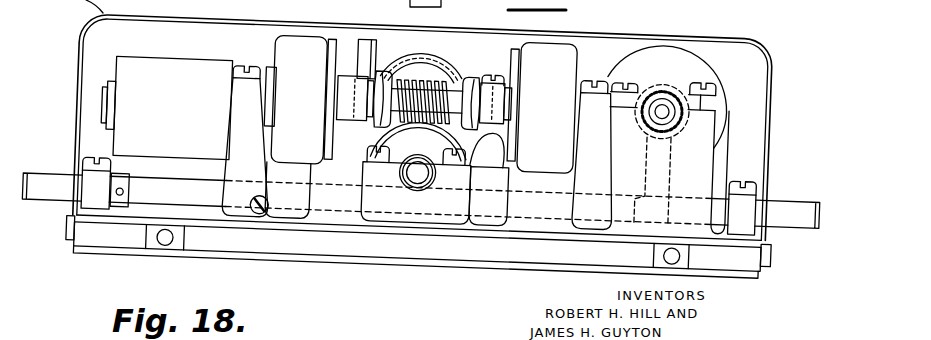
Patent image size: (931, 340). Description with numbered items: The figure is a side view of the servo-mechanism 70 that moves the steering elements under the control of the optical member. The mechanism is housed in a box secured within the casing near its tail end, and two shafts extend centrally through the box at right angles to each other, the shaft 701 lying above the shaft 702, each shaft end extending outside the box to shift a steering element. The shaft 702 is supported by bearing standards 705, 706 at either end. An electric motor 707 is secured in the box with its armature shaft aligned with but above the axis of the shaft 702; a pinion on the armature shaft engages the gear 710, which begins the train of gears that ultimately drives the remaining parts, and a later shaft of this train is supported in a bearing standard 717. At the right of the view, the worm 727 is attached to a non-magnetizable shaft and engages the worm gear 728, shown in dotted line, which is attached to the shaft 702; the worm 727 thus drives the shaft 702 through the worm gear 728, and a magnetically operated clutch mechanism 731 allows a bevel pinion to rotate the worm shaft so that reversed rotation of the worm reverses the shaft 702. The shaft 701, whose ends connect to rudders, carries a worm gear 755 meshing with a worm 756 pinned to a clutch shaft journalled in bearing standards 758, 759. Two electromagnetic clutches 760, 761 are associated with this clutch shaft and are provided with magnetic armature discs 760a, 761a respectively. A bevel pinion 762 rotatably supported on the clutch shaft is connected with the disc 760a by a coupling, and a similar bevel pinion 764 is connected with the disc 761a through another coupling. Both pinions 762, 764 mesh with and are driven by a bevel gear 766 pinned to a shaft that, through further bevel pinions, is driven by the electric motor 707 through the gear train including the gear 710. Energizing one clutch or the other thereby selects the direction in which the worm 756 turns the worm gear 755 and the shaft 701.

The servo-mechanism 70 is at (425, 287).
The shaft 701 is at (416, 178).
The shaft 702 is at (798, 208).
The bearing standard 705 is at (96, 183).
The bearing standard 706 is at (748, 203).
The electric motor 707 is at (170, 72).
The gear 710 is at (366, 52).
The bearing standard 717 is at (493, 205).
The worm 727 is at (669, 86).
The worm gear 728 is at (664, 155).
The clutch mechanism 731 is at (710, 72).
The worm gear 755 is at (473, 143).
The worm 756 is at (428, 84).
The bearing standard 758 is at (236, 128).
The bearing standard 759 is at (585, 179).
The electromagnetic clutch 760 is at (290, 44).
The magnetic armature disc 760a is at (332, 40).
The electromagnetic clutch 761 is at (562, 72).
The magnetic armature disc 761a is at (514, 157).
The bevel pinion 762 is at (378, 77).
The bevel pinion 764 is at (463, 80).
The bevel gear 766 is at (423, 63).